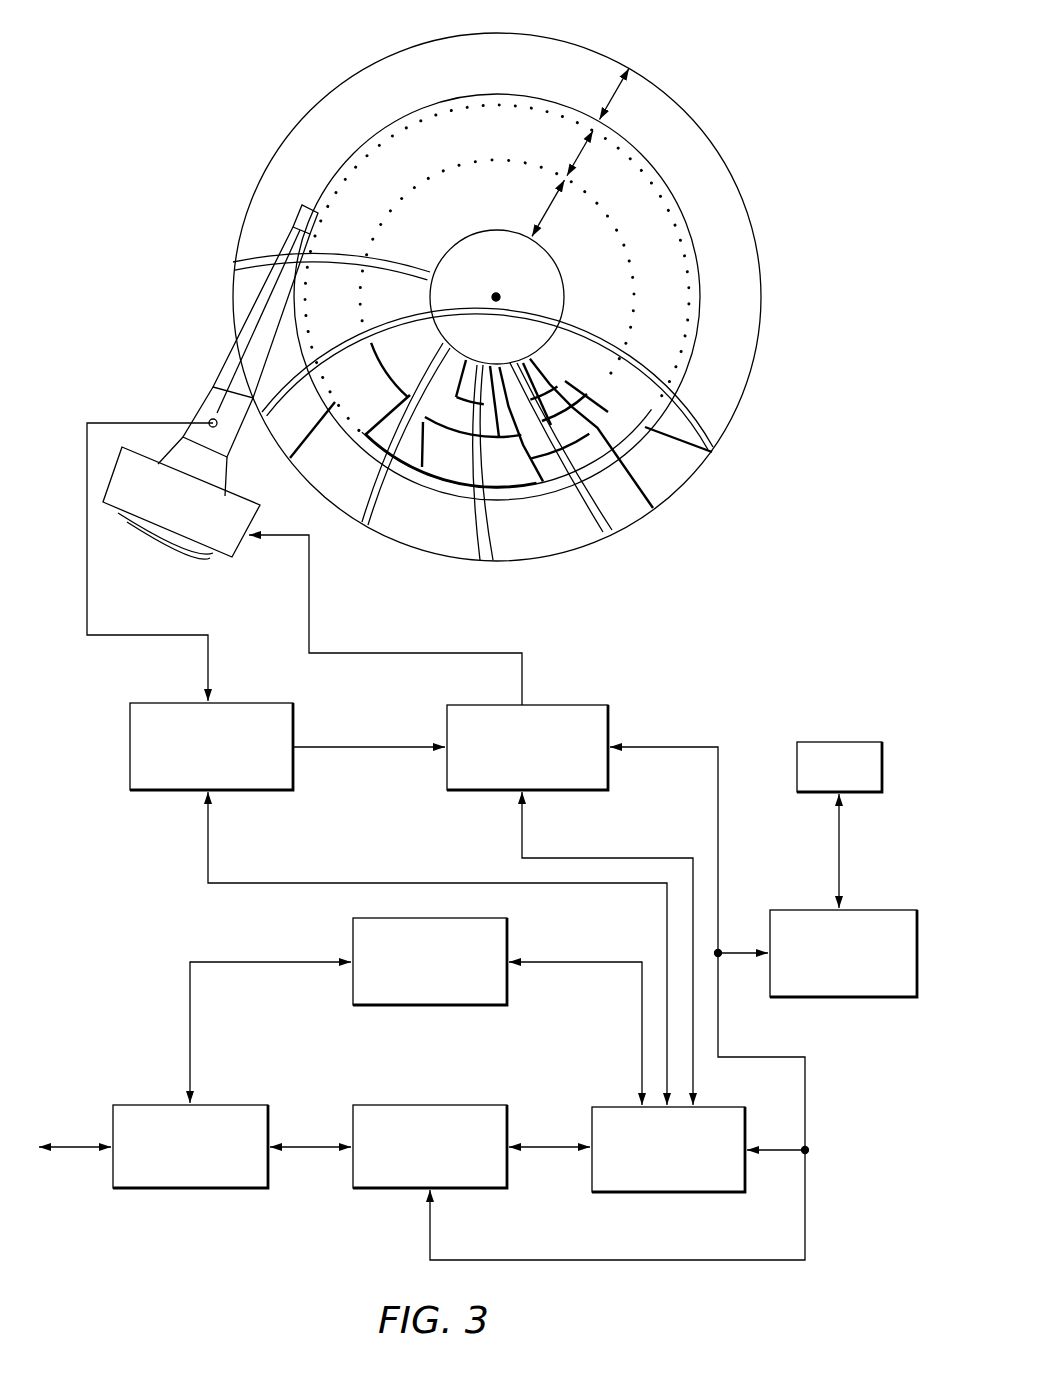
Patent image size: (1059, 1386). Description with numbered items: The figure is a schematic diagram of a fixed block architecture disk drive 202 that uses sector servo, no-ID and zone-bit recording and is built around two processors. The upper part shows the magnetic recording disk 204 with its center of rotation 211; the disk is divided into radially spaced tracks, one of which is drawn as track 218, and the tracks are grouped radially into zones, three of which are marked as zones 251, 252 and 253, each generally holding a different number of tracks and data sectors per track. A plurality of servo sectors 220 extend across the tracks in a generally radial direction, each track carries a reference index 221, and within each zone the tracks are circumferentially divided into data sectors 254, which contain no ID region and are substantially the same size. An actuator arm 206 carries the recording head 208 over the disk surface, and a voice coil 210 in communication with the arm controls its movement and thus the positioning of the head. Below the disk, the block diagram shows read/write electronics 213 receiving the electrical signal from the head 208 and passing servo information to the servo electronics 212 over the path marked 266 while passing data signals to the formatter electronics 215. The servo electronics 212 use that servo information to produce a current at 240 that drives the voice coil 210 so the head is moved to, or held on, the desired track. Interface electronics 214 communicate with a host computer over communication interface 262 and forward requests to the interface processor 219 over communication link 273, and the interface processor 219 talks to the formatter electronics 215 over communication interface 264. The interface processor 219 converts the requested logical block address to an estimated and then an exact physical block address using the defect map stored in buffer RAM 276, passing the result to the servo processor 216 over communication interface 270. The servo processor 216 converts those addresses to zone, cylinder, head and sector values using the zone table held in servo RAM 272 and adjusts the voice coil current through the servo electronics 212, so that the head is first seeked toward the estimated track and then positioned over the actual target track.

The disk drive 202 is at (428, 291).
The magnetic recording disk 204 is at (497, 297).
The actuator arm 206 is at (234, 361).
The recording head 208 is at (253, 212).
The voice coil 210 is at (186, 503).
The center of rotation 211 is at (497, 297).
The servo electronics 212 is at (527, 720).
The read/write electronics 213 is at (211, 774).
The interface electronics 214 is at (190, 1175).
The formatter electronics 215 is at (668, 1177).
The servo processor 216 is at (843, 925).
The track 218 is at (497, 295).
The interface processor 219 is at (430, 1175).
The servo sectors 220 is at (507, 463).
The reference index 221 is at (499, 372).
The voice coil current 240 is at (385, 620).
The first zone 251 is at (591, 93).
The second zone 252 is at (555, 148).
The third zone 253 is at (526, 207).
The data sectors 254 is at (507, 435).
The communication interface 262 is at (75, 1142).
The communication interface 264 is at (549, 1177).
The read/write to servo electronics line 266 is at (369, 722).
The communication interface 270 is at (619, 978).
The servo RAM 272 is at (839, 738).
The communication link 273 is at (310, 1121).
The buffer RAM 276 is at (430, 989).